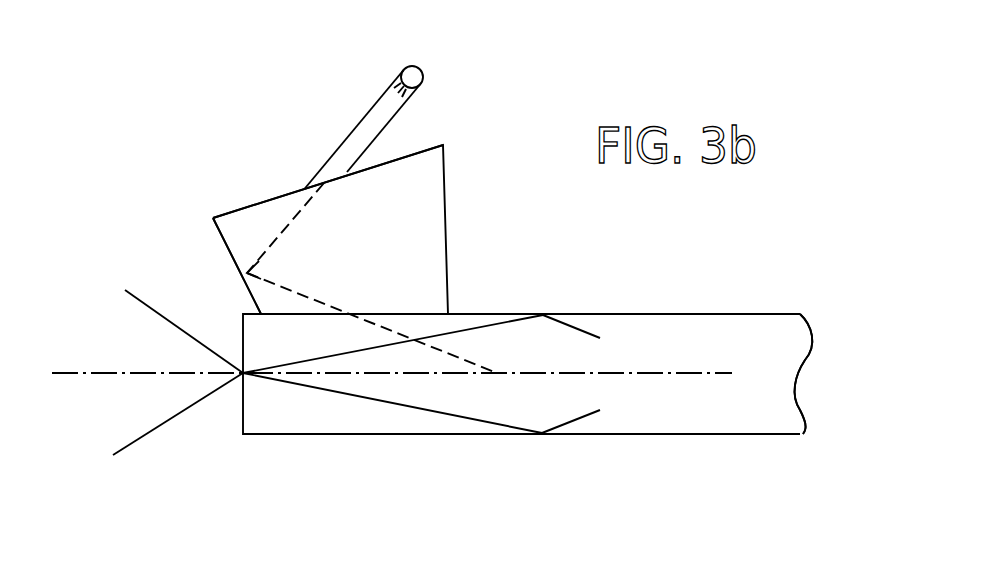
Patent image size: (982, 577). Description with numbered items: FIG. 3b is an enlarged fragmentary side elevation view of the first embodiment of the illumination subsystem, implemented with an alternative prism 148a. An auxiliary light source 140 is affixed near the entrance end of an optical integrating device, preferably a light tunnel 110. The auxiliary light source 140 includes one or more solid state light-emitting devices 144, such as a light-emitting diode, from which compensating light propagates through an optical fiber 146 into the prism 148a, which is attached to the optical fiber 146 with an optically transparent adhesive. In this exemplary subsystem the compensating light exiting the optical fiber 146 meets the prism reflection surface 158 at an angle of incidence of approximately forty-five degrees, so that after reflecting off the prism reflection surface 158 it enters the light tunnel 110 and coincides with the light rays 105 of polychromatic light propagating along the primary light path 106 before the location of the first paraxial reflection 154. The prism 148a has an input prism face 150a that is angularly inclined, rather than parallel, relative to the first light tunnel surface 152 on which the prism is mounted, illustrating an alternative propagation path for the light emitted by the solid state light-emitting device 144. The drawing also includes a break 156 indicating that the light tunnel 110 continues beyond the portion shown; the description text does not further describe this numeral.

The light rays 105 is at (138, 302).
The primary light path 106 is at (417, 376).
The light tunnel 110 is at (673, 435).
The auxiliary light source 140 is at (185, 137).
The solid state light-emitting device 144 is at (421, 69).
The optical fiber 146 is at (359, 122).
The prism 148a is at (447, 195).
The input prism face 150a is at (415, 150).
The first light tunnel surface 152 is at (630, 313).
The first paraxial reflection 154 is at (538, 435).
The light pipe extension (break) 156 is at (811, 327).
The prism reflection surface 158 is at (233, 260).